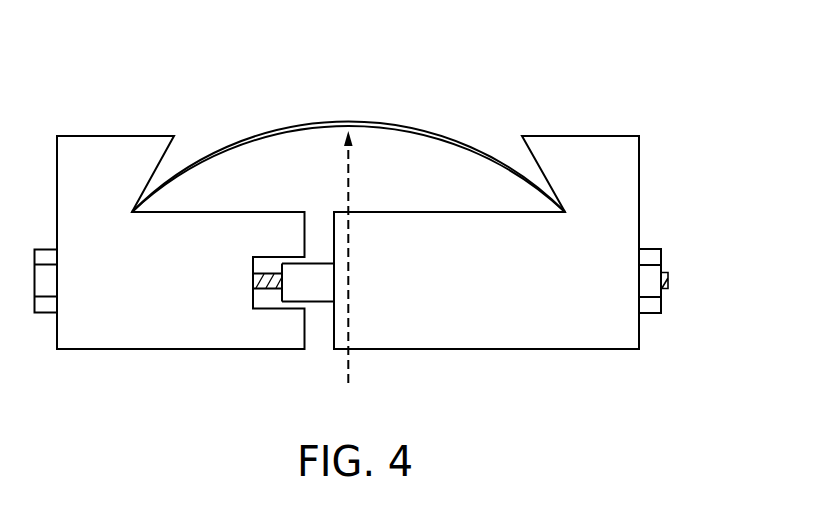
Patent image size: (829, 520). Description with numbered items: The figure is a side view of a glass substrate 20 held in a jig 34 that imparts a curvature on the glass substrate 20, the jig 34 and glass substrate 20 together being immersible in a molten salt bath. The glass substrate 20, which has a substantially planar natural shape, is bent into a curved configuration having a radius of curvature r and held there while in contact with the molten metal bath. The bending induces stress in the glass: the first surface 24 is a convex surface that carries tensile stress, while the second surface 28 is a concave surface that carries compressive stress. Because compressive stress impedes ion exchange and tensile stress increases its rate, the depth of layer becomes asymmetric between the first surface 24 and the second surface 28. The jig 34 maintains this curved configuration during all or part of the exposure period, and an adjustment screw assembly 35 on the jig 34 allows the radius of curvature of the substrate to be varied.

The glass substrate 20 is at (434, 109).
The first surface 24 is at (277, 129).
The second surface 28 is at (284, 143).
The jig 34 is at (639, 153).
The adjustment screw assembly 35 is at (667, 246).